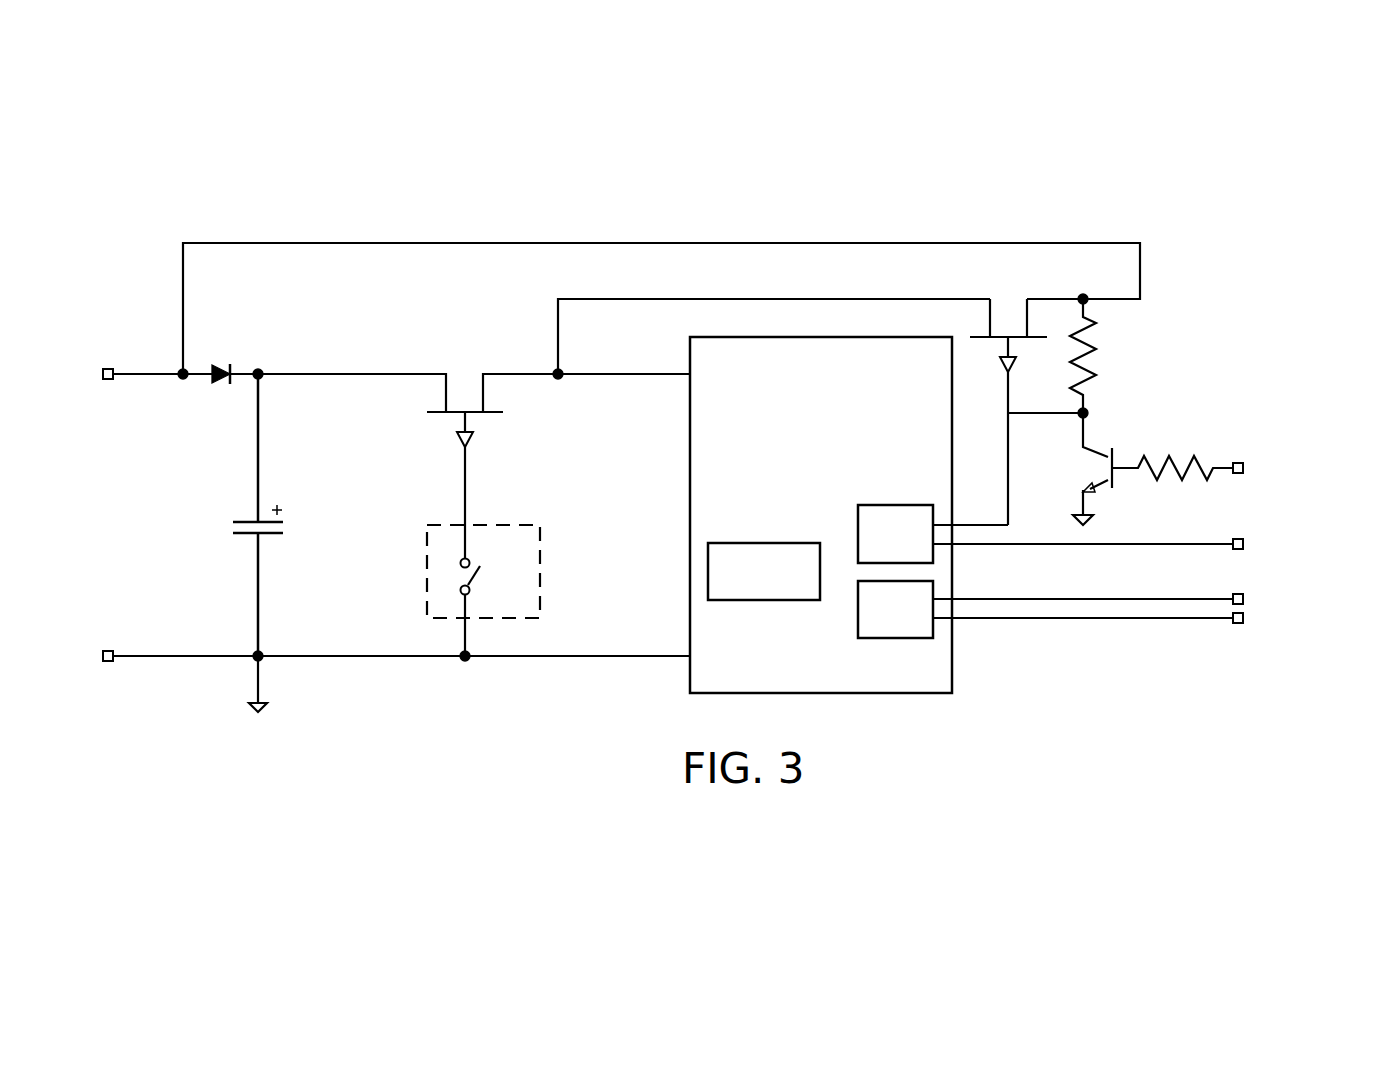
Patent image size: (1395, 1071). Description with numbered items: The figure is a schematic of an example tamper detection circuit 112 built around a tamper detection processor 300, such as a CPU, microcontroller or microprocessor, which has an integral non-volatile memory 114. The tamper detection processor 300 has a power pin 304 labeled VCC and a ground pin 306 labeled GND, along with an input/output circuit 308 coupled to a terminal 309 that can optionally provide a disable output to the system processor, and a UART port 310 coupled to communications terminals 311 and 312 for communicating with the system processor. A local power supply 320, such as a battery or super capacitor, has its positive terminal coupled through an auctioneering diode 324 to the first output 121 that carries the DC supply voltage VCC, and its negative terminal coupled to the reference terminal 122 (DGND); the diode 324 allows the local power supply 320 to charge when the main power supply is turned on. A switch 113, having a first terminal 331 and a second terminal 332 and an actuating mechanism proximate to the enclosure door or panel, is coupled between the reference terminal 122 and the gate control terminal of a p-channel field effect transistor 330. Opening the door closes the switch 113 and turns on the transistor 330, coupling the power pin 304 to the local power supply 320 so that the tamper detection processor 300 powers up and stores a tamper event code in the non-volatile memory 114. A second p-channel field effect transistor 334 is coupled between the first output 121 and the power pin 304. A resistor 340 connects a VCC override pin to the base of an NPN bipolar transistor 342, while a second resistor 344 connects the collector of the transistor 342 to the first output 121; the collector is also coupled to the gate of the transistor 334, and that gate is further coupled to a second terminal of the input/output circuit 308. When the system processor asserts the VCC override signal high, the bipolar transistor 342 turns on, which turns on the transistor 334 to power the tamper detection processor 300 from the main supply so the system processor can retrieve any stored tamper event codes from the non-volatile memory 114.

The tamper detection circuit 112 is at (185, 167).
The switch 113 is at (427, 566).
The non-volatile memory 114 is at (728, 541).
The first output 121 is at (125, 378).
The reference terminal 122 is at (125, 661).
The tamper detection processor 300 is at (690, 347).
The power pin 304 is at (596, 376).
The ground pin 306 is at (596, 655).
The input/output circuit 308 is at (878, 504).
The terminal 309 is at (1158, 543).
The UART port 310 is at (880, 640).
The communications terminal 311 is at (1158, 598).
The communications terminal 312 is at (1158, 620).
The local power supply 320 is at (238, 520).
The auctioneering diode 324 is at (214, 385).
The p-channel field effect transistor 330 is at (446, 370).
The first terminal 331 is at (465, 508).
The second terminal 332 is at (465, 640).
The second p-channel field effect transistor 334 is at (990, 296).
The resistor 340 is at (1197, 455).
The NPN bipolar transistor 342 is at (1103, 448).
The second resistor 344 is at (1095, 322).